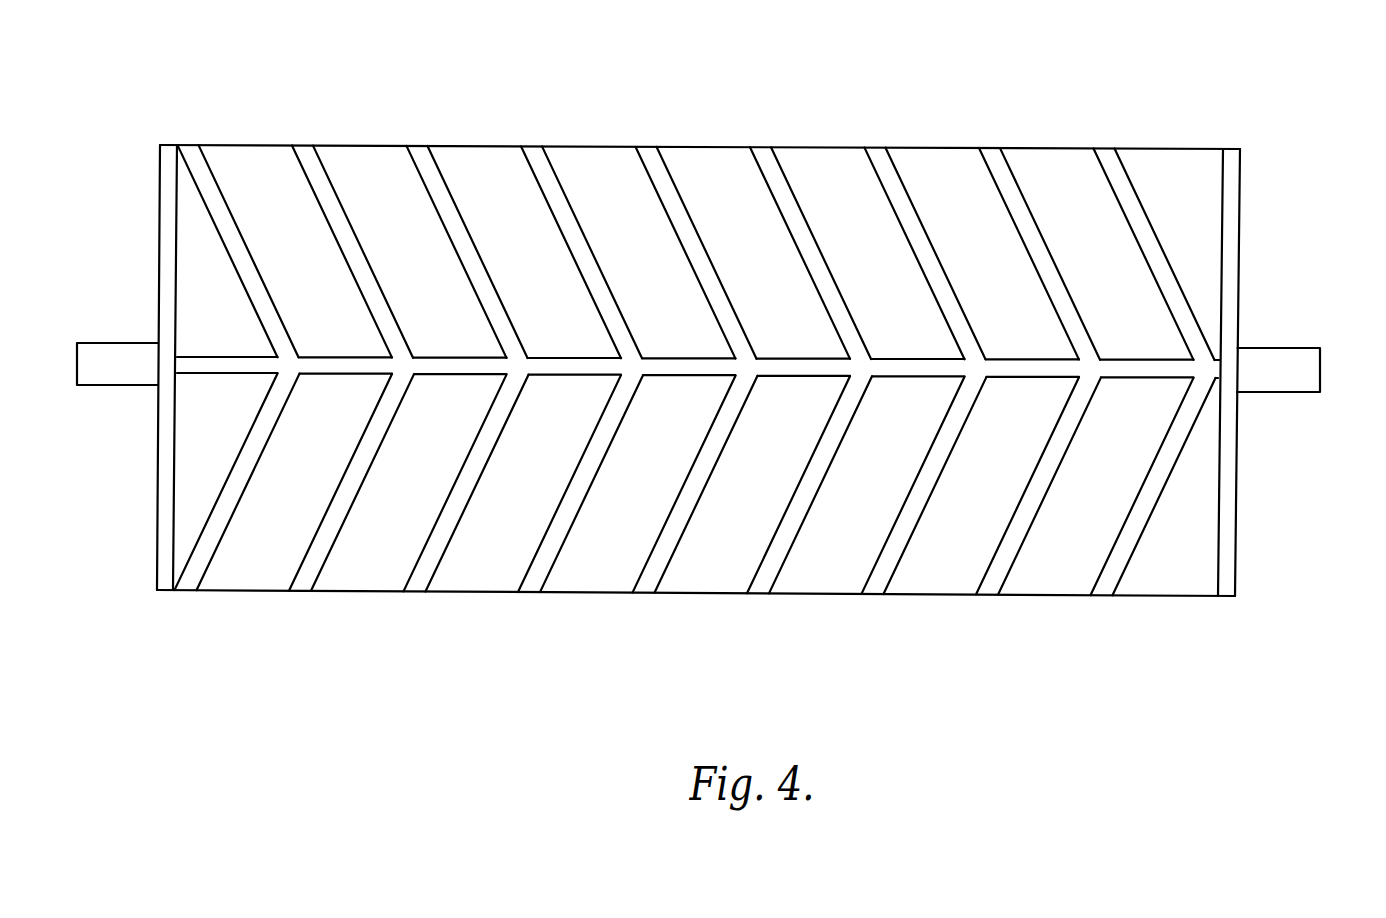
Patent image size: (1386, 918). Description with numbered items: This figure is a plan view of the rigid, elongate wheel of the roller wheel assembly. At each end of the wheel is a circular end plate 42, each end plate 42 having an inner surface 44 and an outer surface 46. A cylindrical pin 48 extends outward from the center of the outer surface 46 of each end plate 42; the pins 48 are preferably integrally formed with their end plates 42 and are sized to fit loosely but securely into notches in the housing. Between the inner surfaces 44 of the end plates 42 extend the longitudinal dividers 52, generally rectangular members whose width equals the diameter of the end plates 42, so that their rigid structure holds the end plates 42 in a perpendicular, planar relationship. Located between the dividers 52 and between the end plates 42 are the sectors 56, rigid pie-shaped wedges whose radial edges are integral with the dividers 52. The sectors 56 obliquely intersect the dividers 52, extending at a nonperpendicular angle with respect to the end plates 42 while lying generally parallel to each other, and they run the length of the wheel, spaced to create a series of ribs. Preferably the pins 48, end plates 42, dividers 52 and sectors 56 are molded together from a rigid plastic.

The circular end plate 42 is at (172, 150).
The inner surface 44 is at (175, 473).
The outer surface 46 is at (157, 543).
The cylindrical pin 48 is at (113, 350).
The longitudinal divider 52 is at (1143, 372).
The sector 56 is at (310, 150).